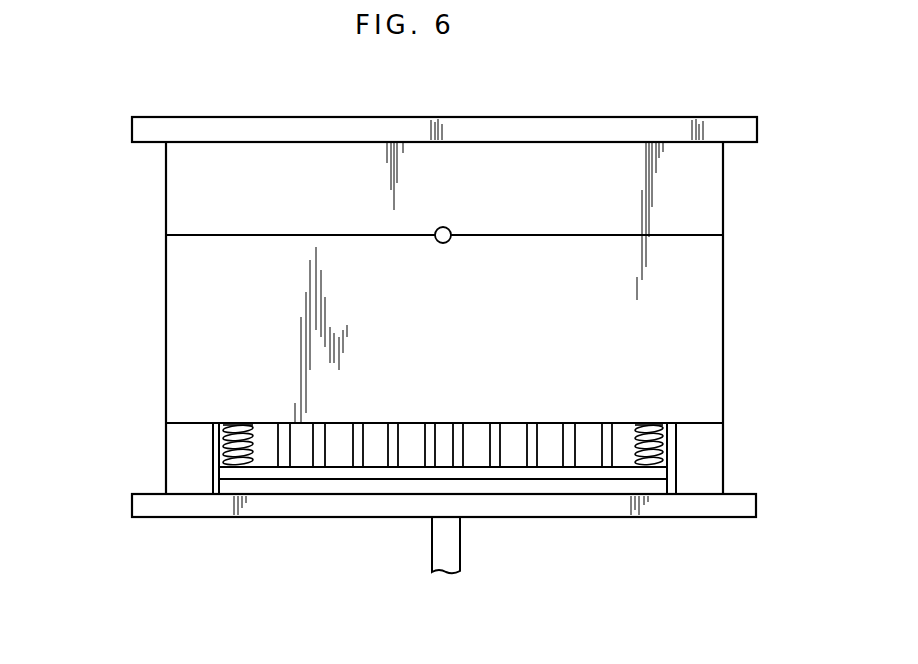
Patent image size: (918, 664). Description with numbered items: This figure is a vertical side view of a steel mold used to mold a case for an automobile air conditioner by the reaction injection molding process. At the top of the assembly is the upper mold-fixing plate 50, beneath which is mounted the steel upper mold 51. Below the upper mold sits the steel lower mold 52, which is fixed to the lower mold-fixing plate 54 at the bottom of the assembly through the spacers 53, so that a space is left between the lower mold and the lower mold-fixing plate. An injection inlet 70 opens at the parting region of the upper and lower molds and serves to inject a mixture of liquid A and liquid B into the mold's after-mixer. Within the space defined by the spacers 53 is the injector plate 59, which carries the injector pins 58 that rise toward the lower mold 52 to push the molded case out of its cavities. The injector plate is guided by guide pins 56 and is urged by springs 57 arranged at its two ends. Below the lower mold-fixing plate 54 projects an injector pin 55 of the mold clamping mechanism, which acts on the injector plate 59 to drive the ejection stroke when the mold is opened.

The upper mold-fixing plate 50 is at (609, 118).
The steel upper mold 51 is at (724, 203).
The steel lower mold 52 is at (724, 287).
The spacers 53 is at (165, 464).
The lower mold-fixing plate 54 is at (757, 505).
The injector pin of a mold clamping mechanism 55 is at (461, 554).
The guide pins 56 is at (236, 425).
The springs 57 is at (254, 444).
The injector pins 58 is at (355, 438).
The injector plate 59 is at (581, 484).
The injection inlet 70 is at (451, 229).